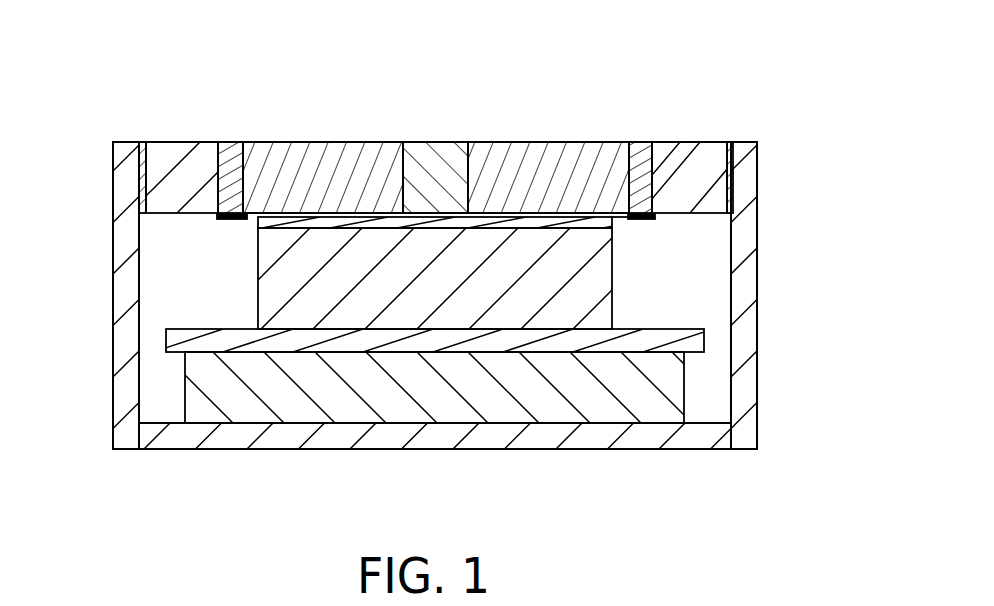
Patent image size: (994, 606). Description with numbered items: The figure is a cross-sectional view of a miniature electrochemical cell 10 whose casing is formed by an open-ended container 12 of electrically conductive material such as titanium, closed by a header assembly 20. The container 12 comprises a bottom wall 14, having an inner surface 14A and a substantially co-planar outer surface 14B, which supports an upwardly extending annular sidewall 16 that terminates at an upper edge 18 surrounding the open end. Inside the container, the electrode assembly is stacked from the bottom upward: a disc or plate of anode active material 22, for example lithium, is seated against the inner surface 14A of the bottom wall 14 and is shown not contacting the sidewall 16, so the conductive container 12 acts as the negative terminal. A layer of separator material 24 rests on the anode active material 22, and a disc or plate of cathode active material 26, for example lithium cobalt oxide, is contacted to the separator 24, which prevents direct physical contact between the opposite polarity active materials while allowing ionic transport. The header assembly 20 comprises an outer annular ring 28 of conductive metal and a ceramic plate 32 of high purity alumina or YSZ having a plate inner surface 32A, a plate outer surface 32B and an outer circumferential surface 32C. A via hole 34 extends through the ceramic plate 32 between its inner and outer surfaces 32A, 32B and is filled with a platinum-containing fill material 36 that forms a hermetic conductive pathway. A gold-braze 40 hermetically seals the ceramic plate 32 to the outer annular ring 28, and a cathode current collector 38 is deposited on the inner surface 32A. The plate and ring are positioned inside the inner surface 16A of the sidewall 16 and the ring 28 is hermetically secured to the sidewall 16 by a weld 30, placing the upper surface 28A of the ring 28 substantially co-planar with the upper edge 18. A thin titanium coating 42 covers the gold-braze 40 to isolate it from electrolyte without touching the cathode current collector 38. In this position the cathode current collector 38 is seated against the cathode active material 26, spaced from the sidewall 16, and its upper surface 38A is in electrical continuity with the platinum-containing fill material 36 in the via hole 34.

The miniature electrochemical cell 10 is at (790, 82).
The open-ended container 12 is at (497, 298).
The bottom wall 14 is at (362, 449).
The inner surface 14A is at (163, 412).
The outer surface 14B is at (163, 460).
The annular sidewall 16 is at (757, 407).
The inner surface of the annular sidewall 16A is at (718, 412).
The upper edge 18 is at (128, 142).
The header assembly 20 is at (439, 118).
The anode active material 22 is at (489, 430).
The separator 24 is at (698, 342).
The cathode active material 26 is at (268, 298).
The outer annular ring 28 is at (196, 142).
The upper surface of the annular ring 28A is at (177, 130).
The weld 30 is at (142, 142).
The ceramic plate 32 is at (540, 142).
The plate inner surface 32A is at (625, 240).
The plate outer surface 32B is at (597, 130).
The outer circumferential surface 32C is at (660, 142).
The via hole 34 is at (403, 142).
The platinum-containing fill material 36 is at (444, 142).
The cathode current collector 38 is at (257, 218).
The upper surface of the cathode current collector 38A is at (299, 198).
The gold-braze 40 is at (233, 142).
The titanium coating 42 is at (655, 218).